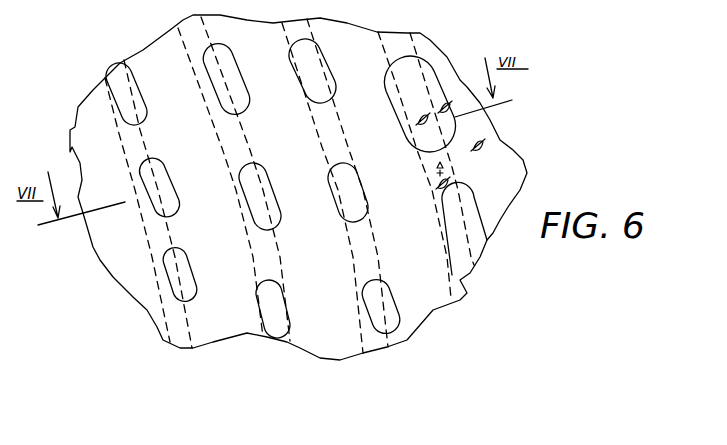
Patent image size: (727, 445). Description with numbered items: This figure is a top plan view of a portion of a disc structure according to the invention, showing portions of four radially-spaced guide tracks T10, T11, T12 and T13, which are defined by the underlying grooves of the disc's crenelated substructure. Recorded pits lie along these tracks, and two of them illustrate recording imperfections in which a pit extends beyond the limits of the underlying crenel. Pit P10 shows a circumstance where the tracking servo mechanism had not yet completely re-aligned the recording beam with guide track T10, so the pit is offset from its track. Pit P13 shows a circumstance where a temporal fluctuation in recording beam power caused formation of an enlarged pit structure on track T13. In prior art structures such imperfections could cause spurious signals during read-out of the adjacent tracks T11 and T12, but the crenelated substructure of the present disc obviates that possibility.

The pit P10 is at (170, 168).
The pit P13 is at (390, 90).
The guide track T10 is at (180, 349).
The guide track T11 is at (278, 341).
The guide track T12 is at (375, 350).
The guide track T13 is at (460, 280).